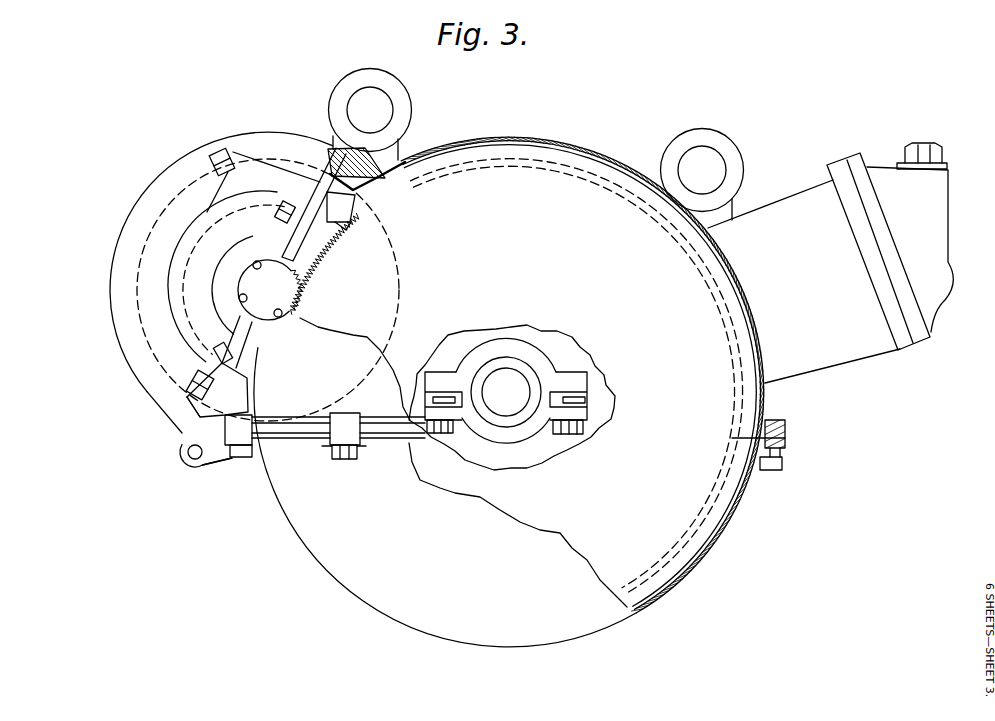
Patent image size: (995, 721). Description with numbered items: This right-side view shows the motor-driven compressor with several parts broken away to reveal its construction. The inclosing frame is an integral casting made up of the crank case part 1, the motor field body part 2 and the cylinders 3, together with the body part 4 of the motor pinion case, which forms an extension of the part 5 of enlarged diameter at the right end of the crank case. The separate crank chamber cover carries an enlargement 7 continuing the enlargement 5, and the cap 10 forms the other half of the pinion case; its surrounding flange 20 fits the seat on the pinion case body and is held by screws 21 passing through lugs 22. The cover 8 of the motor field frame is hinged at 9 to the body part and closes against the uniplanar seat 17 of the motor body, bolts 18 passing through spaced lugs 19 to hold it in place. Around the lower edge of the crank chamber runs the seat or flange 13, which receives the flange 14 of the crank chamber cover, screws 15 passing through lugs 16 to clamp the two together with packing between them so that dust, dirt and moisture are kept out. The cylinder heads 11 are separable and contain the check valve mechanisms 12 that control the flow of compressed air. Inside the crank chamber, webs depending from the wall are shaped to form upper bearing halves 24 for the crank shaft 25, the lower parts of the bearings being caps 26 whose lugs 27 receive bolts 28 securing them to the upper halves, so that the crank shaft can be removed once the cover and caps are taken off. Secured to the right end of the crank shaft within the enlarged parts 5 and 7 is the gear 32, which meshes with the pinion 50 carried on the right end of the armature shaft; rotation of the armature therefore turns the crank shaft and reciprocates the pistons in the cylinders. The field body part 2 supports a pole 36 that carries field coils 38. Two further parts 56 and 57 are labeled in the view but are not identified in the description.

The crank case part 1 is at (393, 412).
The motor field body part 2 is at (250, 459).
The cylinders 3 is at (828, 350).
The body part of the motor pinion case 4 is at (250, 433).
The part of enlarged diameter 5 is at (320, 394).
The enlargement 7 is at (355, 578).
The cover of the motor field frame 8 is at (118, 278).
The hinge 9 is at (193, 460).
The cap 10 is at (221, 294).
The cylinder heads 11 is at (922, 343).
The check valve mechanisms 12 is at (940, 253).
The seat or flange 13 is at (786, 428).
The flange 14 is at (786, 450).
The screws 15 is at (772, 470).
The lugs 16 is at (338, 459).
The uniplanar seat 17 is at (213, 403).
The bolts 18 is at (218, 156).
The lugs 19 is at (247, 158).
The surrounding flange 20 is at (213, 366).
The screws 21 is at (277, 217).
The lugs 22 is at (297, 200).
The upper bearing halves 24 is at (538, 360).
The crank shaft 25 is at (512, 406).
The caps 26 is at (503, 440).
The lugs 27 is at (445, 433).
The bolts 28 is at (456, 443).
The gear 32 is at (315, 263).
The pole 36 is at (355, 196).
The field coils 38 is at (392, 165).
The pinion 50 is at (289, 268).
The roller 56 is at (712, 136).
The roller 57 is at (370, 78).